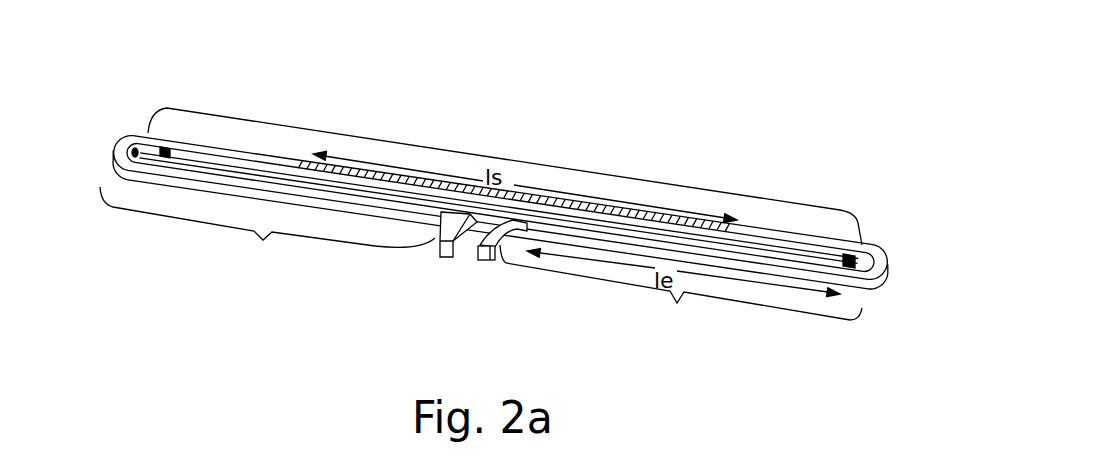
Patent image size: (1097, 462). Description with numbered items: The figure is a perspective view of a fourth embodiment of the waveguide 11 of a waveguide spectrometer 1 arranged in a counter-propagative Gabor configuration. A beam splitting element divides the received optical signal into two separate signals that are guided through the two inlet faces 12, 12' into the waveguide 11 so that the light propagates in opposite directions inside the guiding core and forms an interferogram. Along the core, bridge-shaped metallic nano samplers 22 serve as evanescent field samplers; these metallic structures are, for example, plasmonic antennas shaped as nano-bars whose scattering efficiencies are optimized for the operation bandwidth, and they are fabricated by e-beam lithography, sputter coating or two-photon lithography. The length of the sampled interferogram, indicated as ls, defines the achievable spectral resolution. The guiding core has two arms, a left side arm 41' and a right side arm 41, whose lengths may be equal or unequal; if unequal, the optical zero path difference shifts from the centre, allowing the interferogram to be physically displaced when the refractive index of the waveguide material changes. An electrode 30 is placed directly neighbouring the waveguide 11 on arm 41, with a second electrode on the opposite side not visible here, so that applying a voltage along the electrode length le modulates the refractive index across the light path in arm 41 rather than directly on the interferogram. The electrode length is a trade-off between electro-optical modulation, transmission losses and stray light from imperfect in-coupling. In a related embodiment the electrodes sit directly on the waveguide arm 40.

The waveguide spectrometer 1 is at (395, 98).
The waveguide 11 is at (258, 110).
The inlet face 12 is at (429, 272).
The inlet face 12' is at (483, 281).
The bridge-shaped metallic nano sampler 22 is at (559, 198).
The electrode 30 is at (813, 289).
The waveguide arm 40 is at (553, 172).
The arm 41 is at (681, 292).
The arm 41' is at (267, 230).